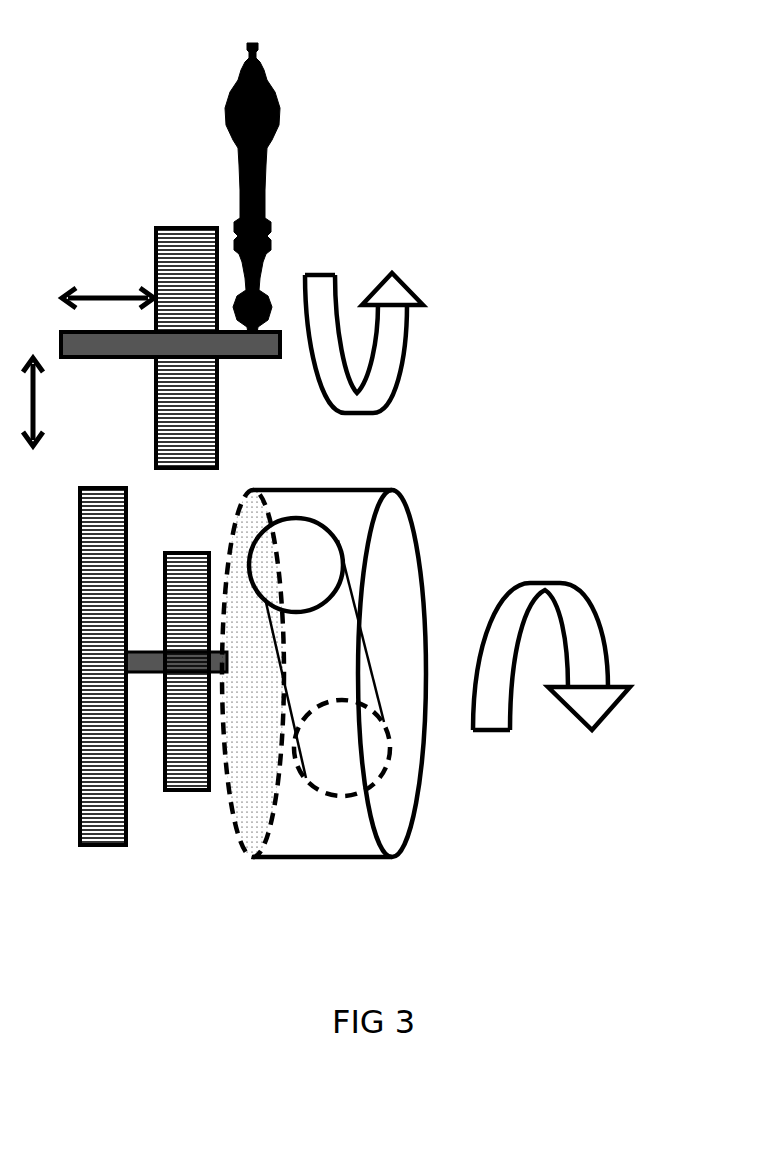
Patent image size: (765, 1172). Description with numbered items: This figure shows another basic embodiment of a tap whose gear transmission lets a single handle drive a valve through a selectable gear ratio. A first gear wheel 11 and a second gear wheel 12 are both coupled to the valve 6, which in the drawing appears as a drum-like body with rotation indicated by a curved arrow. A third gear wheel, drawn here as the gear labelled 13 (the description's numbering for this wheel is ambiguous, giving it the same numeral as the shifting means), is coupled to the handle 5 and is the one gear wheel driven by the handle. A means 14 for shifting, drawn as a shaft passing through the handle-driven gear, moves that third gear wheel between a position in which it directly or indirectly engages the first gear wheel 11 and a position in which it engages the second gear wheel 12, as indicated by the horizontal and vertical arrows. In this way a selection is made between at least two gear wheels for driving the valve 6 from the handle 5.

The handle 5 is at (305, 110).
The valve 6 is at (425, 815).
The first gear wheel 11 is at (102, 860).
The second gear wheel 12 is at (193, 810).
The third gear 13 is at (155, 212).
The means for shifting the third gear wheel 14 is at (113, 367).